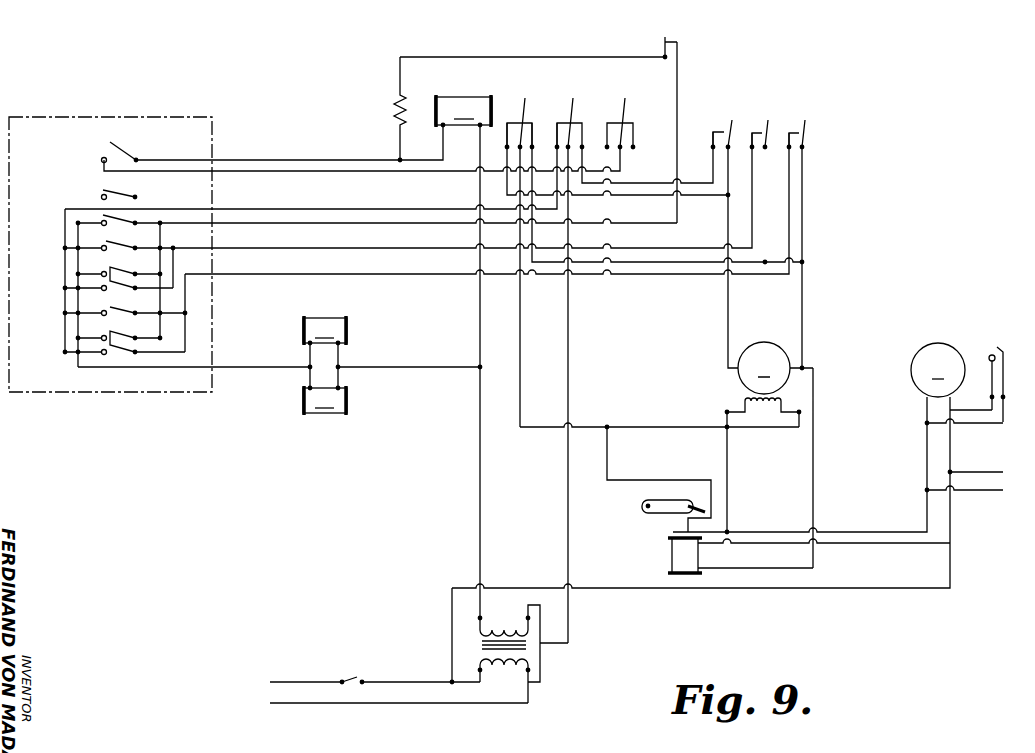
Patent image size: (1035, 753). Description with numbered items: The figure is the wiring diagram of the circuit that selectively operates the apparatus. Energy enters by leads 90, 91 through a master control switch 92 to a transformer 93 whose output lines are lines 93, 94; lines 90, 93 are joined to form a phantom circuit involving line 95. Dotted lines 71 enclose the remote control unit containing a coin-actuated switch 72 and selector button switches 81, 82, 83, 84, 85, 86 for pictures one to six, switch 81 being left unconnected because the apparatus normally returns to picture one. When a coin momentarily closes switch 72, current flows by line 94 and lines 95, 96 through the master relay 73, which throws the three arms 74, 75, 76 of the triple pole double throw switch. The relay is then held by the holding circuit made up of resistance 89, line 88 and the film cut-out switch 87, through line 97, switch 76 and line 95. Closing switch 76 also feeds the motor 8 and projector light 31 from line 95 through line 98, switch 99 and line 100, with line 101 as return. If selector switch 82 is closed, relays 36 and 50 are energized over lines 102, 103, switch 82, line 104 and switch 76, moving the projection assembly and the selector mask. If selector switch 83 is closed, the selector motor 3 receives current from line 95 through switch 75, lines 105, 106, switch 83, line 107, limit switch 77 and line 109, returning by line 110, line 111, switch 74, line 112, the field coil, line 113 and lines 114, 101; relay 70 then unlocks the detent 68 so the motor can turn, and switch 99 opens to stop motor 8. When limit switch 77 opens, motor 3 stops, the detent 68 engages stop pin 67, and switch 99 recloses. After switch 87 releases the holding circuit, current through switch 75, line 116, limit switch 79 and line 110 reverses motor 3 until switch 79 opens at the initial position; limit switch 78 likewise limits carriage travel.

The selector motor 3 is at (775, 368).
The motor 8 is at (938, 370).
The projector light 31 is at (1011, 343).
The relay 36 is at (325, 330).
The relay 50 is at (325, 400).
The stop pin 67 is at (699, 497).
The detent 68 is at (641, 508).
The relay 70 is at (671, 563).
The control buttons and coin chute 71 is at (200, 116).
The coin-actuated switch 72 is at (110, 148).
The master relay 73 is at (463, 111).
The switch 74 is at (523, 100).
The switch 75 is at (572, 100).
The switch 76 is at (624, 100).
The limit switch 77 is at (767, 121).
The limit switch 78 is at (804, 121).
The limit switch 79 is at (730, 121).
The selector button switch 81 is at (130, 195).
The selector button switch 82 is at (128, 220).
The selector button switch 83 is at (118, 245).
The selector button switch 84 is at (118, 271).
The selector button switch 85 is at (118, 309).
The selector button switch 86 is at (126, 356).
The film cut-out switch 87 is at (671, 36).
The line 88 is at (579, 58).
The resistance 89 is at (395, 118).
The lead 90 is at (338, 705).
The lead 91 is at (300, 681).
The master control switch 92 is at (355, 677).
The transformer output line 93 is at (540, 605).
The transformer output line 94 is at (479, 422).
The line 95 is at (567, 487).
The line 96 is at (268, 174).
The line 97 is at (680, 91).
The line 98 is at (670, 479).
The switch 99 is at (672, 533).
The line 100 is at (866, 531).
The return line 101 is at (757, 593).
The line 102 is at (402, 366).
The line 103 is at (258, 355).
The line 104 is at (269, 225).
The line 105 is at (304, 209).
The line 106 is at (65, 322).
The line 107 is at (322, 250).
The line 109 is at (808, 323).
The line 110 is at (726, 317).
The line 111 is at (519, 398).
The line 112 is at (650, 428).
The line 113 is at (728, 479).
The line 114 is at (869, 546).
The line 116 is at (668, 183).